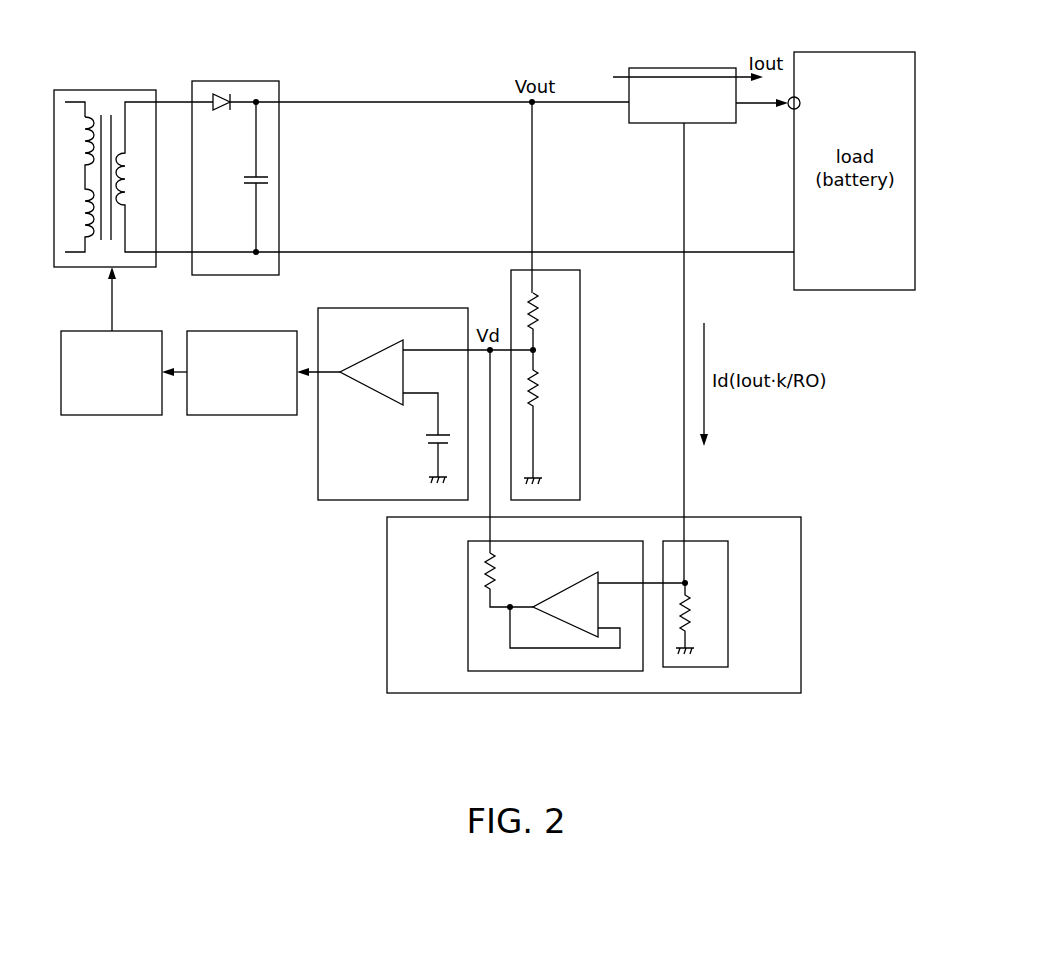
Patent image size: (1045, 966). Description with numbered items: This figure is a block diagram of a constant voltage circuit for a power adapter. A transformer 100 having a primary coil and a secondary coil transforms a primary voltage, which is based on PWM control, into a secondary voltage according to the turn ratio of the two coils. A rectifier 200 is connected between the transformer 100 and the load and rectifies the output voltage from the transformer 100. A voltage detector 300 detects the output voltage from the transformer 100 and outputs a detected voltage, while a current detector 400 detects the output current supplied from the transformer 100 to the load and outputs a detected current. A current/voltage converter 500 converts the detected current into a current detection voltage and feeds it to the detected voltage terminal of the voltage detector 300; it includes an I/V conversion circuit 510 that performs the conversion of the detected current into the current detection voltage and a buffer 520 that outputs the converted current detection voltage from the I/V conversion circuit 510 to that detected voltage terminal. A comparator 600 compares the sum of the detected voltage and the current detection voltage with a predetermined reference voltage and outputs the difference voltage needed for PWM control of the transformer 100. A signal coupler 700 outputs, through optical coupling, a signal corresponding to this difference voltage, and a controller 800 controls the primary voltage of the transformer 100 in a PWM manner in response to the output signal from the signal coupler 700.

The transformer 100 is at (135, 90).
The rectifier 200 is at (264, 80).
The voltage detector 300 is at (580, 325).
The current detector 400 is at (683, 68).
The current/voltage converter 500 is at (594, 647).
The I/V conversion circuit 510 is at (728, 600).
The buffer 520 is at (468, 617).
The comparator 600 is at (318, 480).
The signal coupler 700 is at (232, 415).
The controller 800 is at (93, 415).